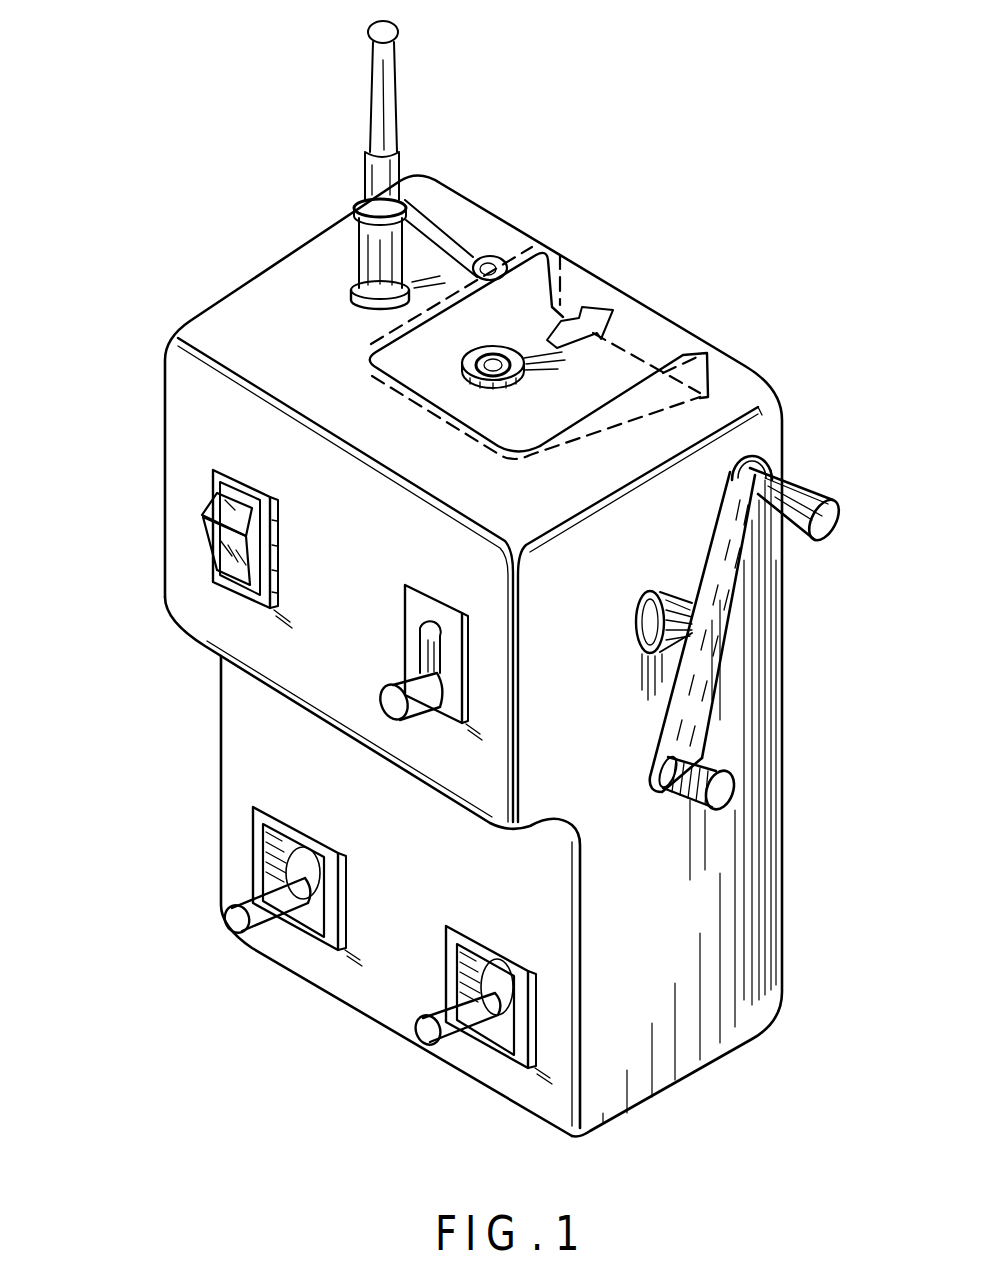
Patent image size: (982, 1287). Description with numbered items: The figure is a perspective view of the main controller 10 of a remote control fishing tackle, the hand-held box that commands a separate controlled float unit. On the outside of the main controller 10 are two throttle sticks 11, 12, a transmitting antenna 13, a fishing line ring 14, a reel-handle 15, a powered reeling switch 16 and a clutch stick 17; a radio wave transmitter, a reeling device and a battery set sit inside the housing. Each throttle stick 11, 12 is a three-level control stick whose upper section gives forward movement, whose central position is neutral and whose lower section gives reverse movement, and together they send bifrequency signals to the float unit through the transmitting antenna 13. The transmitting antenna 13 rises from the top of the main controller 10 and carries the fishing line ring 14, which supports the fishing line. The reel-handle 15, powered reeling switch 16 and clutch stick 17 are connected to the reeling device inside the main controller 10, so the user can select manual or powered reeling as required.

The main controller 10 is at (142, 465).
The throttle stick 11 is at (277, 913).
The throttle stick 12 is at (482, 1028).
The transmitting antenna 13 is at (398, 65).
The fishing line ring 14 is at (488, 252).
The reel-handle 15 is at (813, 481).
The powered reeling switch 16 is at (213, 562).
The clutch stick 17 is at (387, 683).